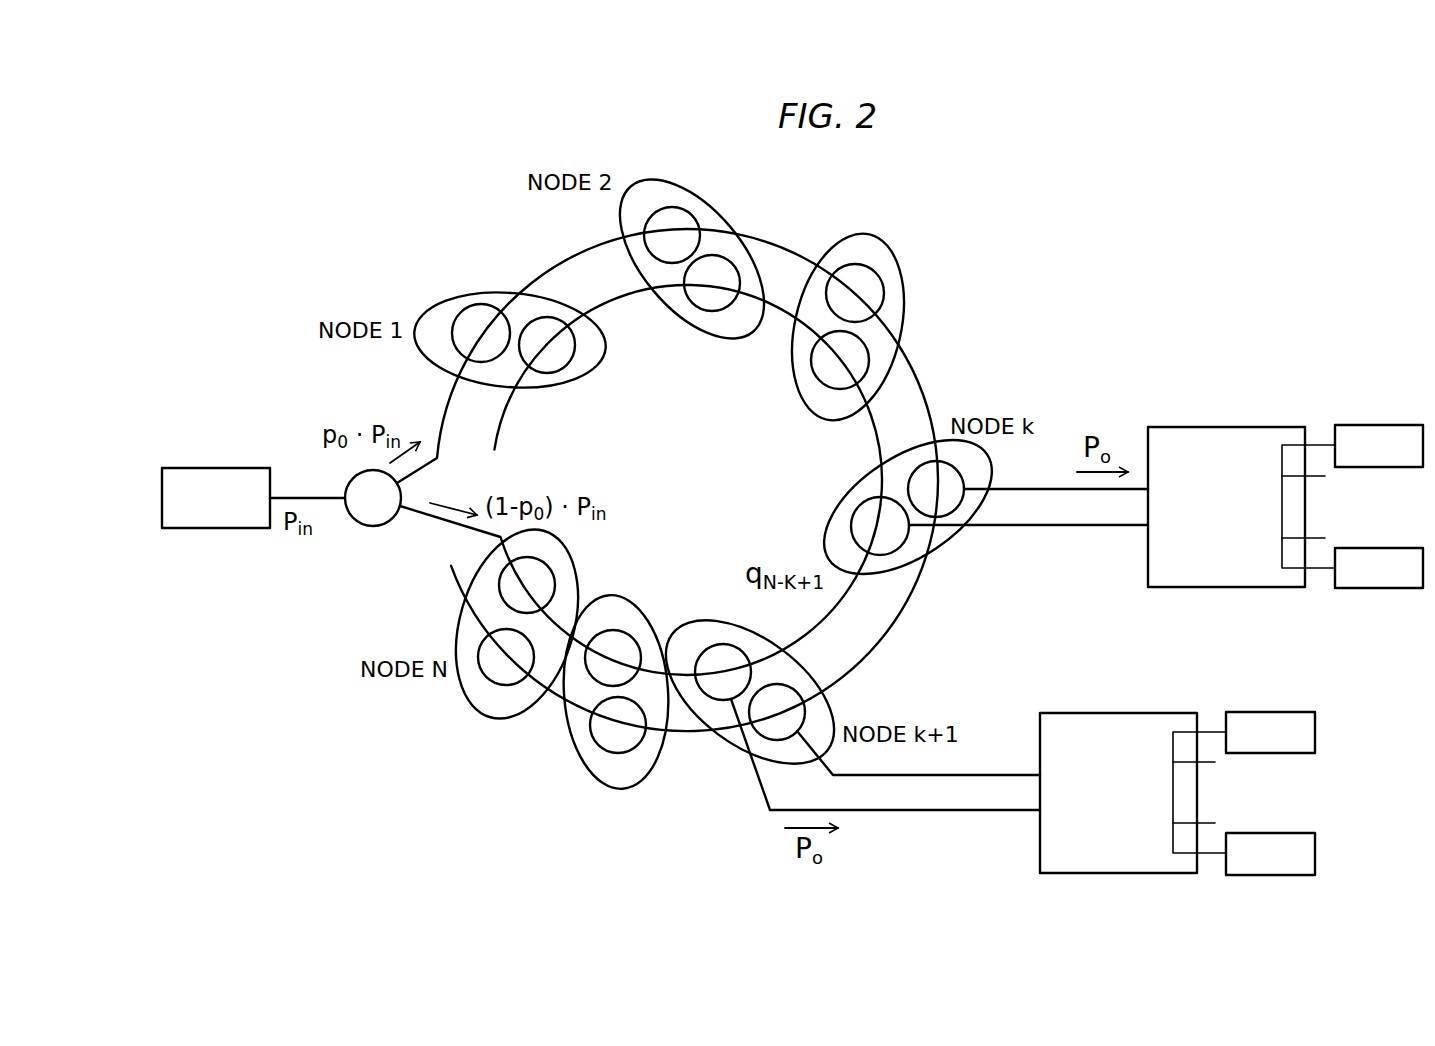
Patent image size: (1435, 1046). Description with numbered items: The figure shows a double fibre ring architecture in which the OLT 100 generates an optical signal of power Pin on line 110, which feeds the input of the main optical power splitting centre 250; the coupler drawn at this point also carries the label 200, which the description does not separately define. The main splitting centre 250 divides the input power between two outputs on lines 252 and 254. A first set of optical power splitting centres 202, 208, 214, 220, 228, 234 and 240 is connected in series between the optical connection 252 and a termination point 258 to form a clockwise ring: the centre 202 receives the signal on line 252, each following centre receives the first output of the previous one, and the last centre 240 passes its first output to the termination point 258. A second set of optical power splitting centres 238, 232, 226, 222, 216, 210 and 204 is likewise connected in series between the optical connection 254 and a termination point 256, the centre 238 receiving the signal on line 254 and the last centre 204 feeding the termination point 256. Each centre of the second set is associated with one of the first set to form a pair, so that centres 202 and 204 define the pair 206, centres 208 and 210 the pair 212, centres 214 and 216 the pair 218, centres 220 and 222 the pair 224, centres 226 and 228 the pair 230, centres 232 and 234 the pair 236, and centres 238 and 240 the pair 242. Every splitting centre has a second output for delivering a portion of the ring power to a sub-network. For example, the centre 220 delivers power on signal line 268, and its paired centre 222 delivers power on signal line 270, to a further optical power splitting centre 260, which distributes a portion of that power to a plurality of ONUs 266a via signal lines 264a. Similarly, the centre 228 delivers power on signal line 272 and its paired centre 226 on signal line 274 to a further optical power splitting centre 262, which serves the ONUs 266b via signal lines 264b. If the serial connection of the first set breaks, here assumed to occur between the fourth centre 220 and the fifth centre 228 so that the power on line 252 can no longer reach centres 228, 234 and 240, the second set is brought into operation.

The OLT 100 is at (198, 530).
The line 110 is at (299, 495).
The input coupler P0 200 is at (360, 518).
The main optical power splitting centre 250 is at (373, 528).
The optical connection 252 is at (437, 458).
The optical connection 254 is at (421, 518).
The termination point 256 is at (494, 450).
The termination point 258 is at (452, 566).
The optical power splitting centre 202 is at (456, 318).
The optical power splitting centre 204 is at (566, 372).
The pair 206 is at (489, 294).
The optical power splitting centre 208 is at (716, 213).
The optical power splitting centre 210 is at (706, 312).
The pair 212 is at (640, 182).
The optical power splitting centre 214 is at (884, 292).
The optical power splitting centre 216 is at (814, 376).
The pair 218 is at (866, 236).
The optical power splitting centre 220 is at (965, 481).
The optical power splitting centre 222 is at (924, 558).
The pair 224 is at (845, 509).
The optical power splitting centre 226 is at (746, 650).
The optical power splitting centre 228 is at (820, 713).
The pair 230 is at (708, 620).
The optical power splitting centre 232 is at (617, 630).
The optical power splitting centre 234 is at (590, 765).
The pair 236 is at (627, 791).
The optical power splitting centre 238 is at (574, 562).
The optical power splitting centre 240 is at (483, 684).
The pair 242 is at (496, 719).
The further optical power splitting centre 260 is at (1190, 427).
The further optical power splitting centre 262 is at (1080, 713).
The signal lines 264a is at (1318, 436).
The ONUs 266a is at (1377, 468).
The signal lines 264b is at (1210, 725).
The ONUs 266b is at (1270, 754).
The signal line 268 is at (1063, 489).
The signal line 270 is at (1046, 525).
The signal line 272 is at (947, 776).
The signal line 274 is at (931, 811).